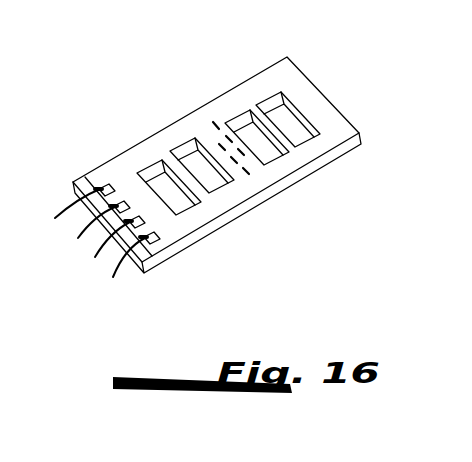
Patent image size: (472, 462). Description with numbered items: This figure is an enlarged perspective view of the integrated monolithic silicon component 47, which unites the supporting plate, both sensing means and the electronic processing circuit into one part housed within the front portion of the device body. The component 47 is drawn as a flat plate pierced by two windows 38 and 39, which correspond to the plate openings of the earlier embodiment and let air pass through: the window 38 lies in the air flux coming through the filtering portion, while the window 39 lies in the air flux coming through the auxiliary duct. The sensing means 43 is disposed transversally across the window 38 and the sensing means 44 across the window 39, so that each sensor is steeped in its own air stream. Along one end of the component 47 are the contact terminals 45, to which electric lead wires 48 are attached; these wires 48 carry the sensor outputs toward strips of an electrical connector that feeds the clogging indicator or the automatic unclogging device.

The window 38 is at (197, 172).
The window 39 is at (293, 132).
The sensing means 43 is at (137, 173).
The sensing means 44 is at (287, 118).
The contact terminals 45 is at (141, 218).
The integrated monolithic silicon component 47 is at (148, 132).
The electric lead wires 48 is at (65, 212).